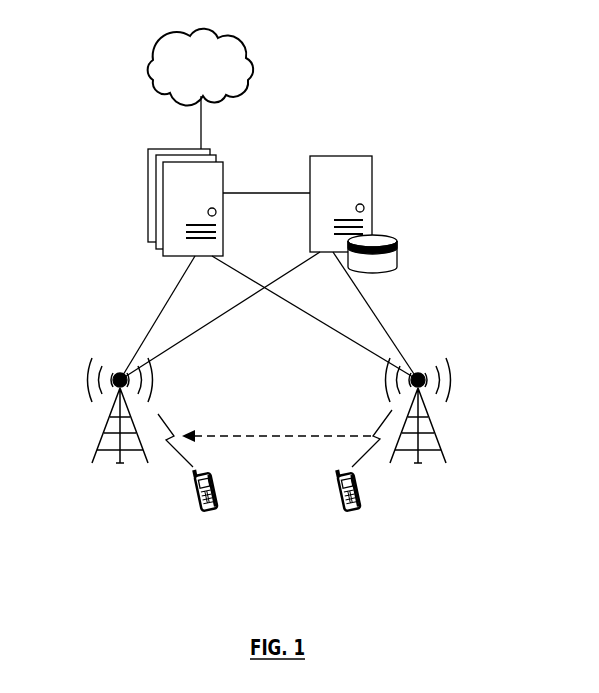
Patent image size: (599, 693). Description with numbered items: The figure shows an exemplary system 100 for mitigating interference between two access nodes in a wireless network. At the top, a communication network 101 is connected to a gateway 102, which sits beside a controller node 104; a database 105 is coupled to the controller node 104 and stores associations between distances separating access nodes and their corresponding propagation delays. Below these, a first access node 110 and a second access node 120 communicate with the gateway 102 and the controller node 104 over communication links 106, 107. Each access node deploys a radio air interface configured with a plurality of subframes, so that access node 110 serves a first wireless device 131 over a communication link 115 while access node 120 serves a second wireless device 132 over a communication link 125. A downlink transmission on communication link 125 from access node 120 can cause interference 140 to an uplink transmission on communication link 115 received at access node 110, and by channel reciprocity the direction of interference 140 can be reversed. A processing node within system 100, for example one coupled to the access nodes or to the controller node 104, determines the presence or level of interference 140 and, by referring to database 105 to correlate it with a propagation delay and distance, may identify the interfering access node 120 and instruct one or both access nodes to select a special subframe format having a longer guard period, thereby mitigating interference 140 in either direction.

The system 100 is at (349, 28).
The communication network 101 is at (217, 76).
The gateway 102 is at (168, 150).
The controller node 104 is at (372, 153).
The database 105 is at (396, 238).
The communication link 106 is at (172, 293).
The communication link 107 is at (253, 280).
The access node 110 is at (108, 433).
The communication link 115 is at (187, 462).
The access node 120 is at (430, 433).
The communication link 125 is at (358, 457).
The wireless device 131 is at (195, 510).
The wireless device 132 is at (358, 512).
The interference 140 is at (262, 435).